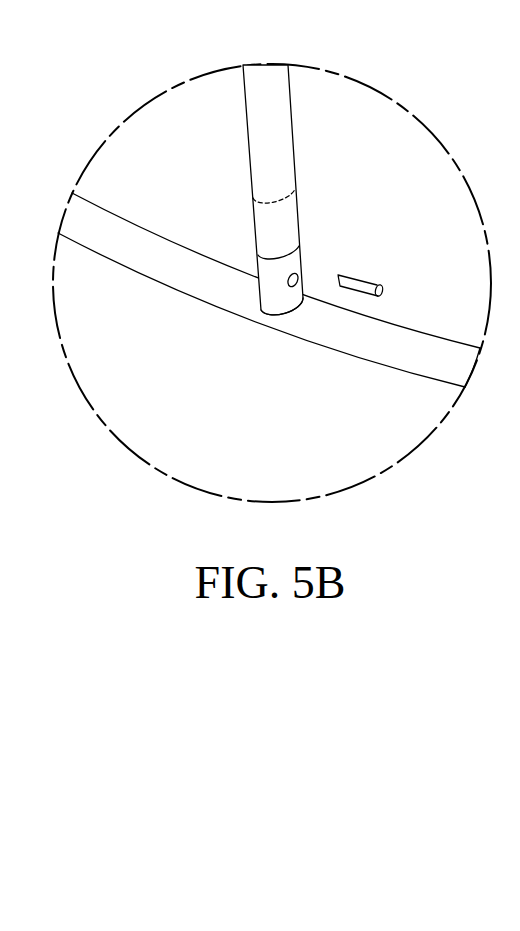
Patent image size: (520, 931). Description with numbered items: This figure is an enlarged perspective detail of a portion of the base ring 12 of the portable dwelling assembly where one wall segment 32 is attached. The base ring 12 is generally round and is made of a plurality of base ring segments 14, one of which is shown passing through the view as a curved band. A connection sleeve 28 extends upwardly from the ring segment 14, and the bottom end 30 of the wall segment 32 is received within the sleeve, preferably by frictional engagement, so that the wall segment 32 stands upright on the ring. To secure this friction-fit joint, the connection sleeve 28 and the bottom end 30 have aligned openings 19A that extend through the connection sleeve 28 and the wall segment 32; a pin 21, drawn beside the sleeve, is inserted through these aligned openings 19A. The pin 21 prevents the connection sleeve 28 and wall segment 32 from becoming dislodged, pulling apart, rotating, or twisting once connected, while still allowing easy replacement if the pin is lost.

The base ring 12 is at (197, 352).
The base ring segment 14 is at (229, 312).
The aligned opening 19A is at (305, 275).
The pin 21 is at (366, 280).
The connection sleeve 28 is at (255, 265).
The bottom end 30 is at (292, 246).
The wall segment 32 is at (293, 135).